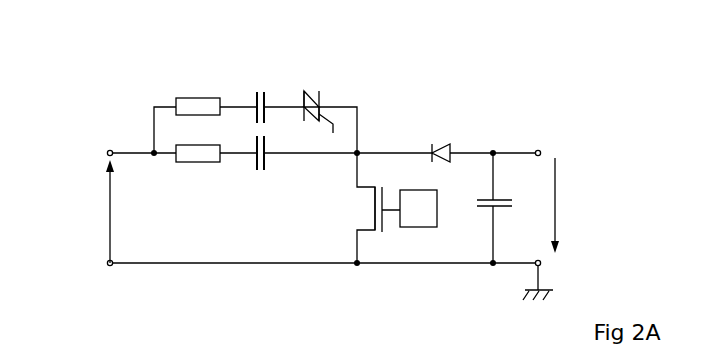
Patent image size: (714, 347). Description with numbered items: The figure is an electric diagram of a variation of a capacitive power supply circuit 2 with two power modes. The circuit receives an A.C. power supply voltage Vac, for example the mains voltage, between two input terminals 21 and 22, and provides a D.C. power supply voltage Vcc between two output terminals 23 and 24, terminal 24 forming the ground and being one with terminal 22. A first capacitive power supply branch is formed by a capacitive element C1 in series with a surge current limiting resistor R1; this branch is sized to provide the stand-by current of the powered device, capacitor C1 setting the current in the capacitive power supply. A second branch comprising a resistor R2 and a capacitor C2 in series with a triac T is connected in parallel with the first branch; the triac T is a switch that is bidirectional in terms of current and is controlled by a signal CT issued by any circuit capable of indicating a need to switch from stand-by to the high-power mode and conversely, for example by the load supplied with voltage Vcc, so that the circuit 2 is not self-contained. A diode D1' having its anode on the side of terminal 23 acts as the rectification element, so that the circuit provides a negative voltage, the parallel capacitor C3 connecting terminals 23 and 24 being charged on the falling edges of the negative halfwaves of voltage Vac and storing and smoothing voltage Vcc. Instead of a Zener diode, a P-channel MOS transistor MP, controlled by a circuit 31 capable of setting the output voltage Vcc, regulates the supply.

The power supply circuit 2 is at (186, 295).
The input terminal 21 is at (107, 151).
The input terminal 22 is at (108, 264).
The output terminal 23 is at (541, 152).
The output terminal 24 is at (542, 263).
The circuit 31 is at (418, 227).
The triac T is at (313, 88).
The signal CT is at (331, 133).
The surge current limiting resistor R1 is at (198, 165).
The resistor R2 is at (198, 96).
The capacitive element C1 is at (262, 164).
The capacitor C2 is at (262, 94).
The diode D1' is at (443, 140).
The MOS transistor MP is at (373, 209).
The parallel capacitor C3 is at (481, 208).
The A.C. power supply voltage Vac is at (96, 211).
The D.C. power supply voltage Vcc is at (571, 205).